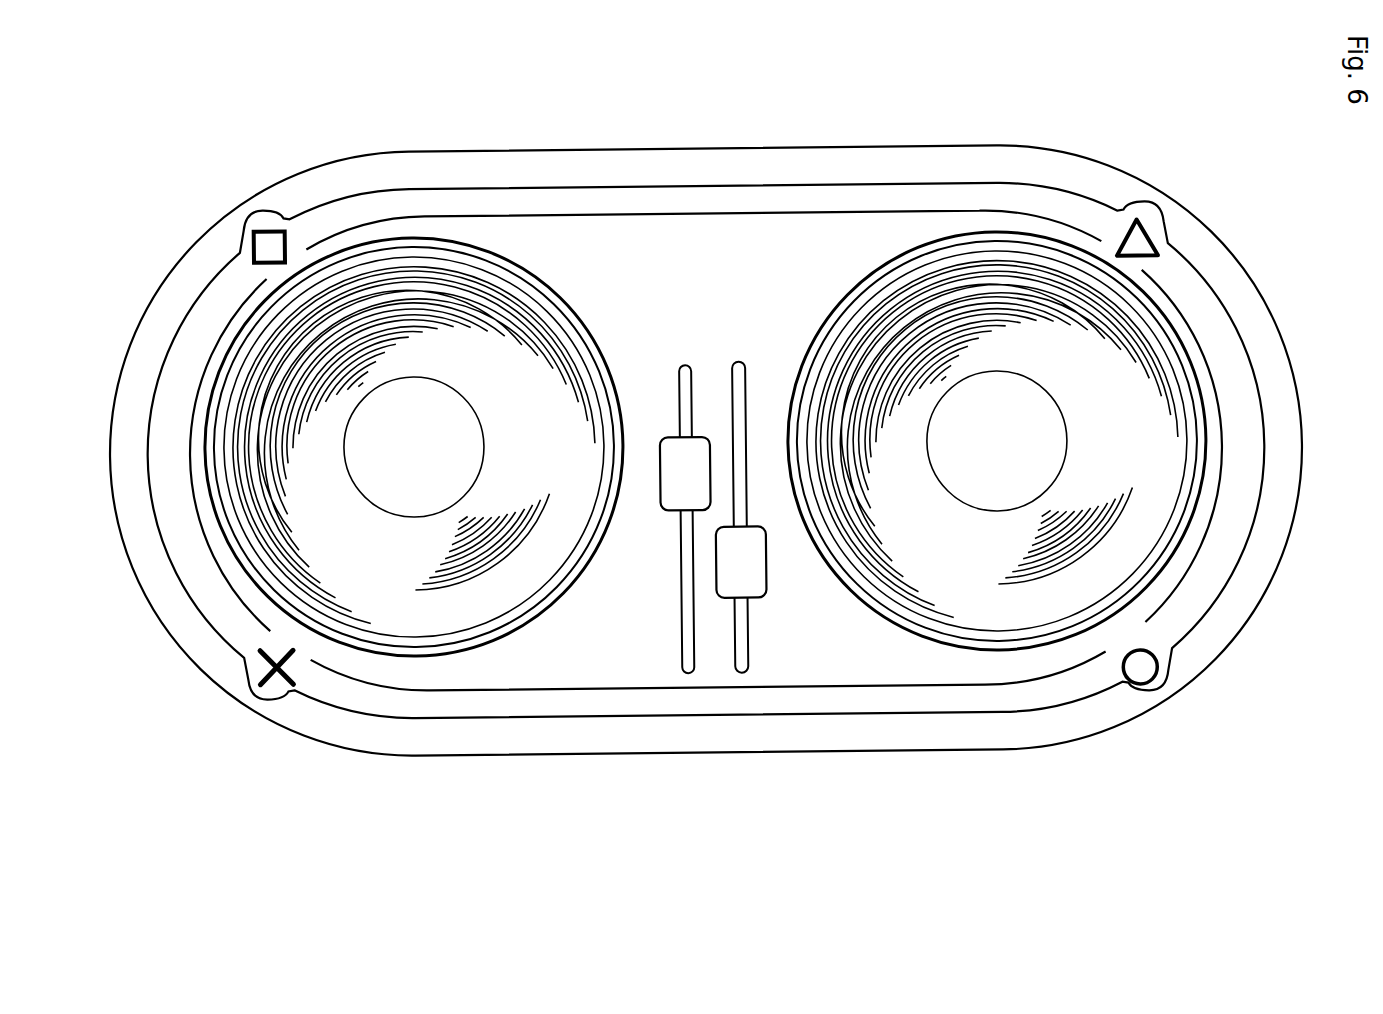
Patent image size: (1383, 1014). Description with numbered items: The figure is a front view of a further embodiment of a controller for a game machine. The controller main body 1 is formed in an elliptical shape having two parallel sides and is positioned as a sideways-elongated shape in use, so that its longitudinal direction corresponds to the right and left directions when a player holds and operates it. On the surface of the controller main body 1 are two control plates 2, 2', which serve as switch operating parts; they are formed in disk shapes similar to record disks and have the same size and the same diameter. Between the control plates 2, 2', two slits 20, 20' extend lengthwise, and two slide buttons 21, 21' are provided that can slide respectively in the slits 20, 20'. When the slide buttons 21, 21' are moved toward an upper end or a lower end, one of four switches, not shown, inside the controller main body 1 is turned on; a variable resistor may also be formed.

The controller main body 1 is at (497, 732).
The control plate 2 is at (414, 356).
The control plate 2' is at (997, 353).
The slit 20 is at (658, 367).
The slit 20' is at (790, 367).
The slide button 21 is at (658, 641).
The slide button 21' is at (790, 685).